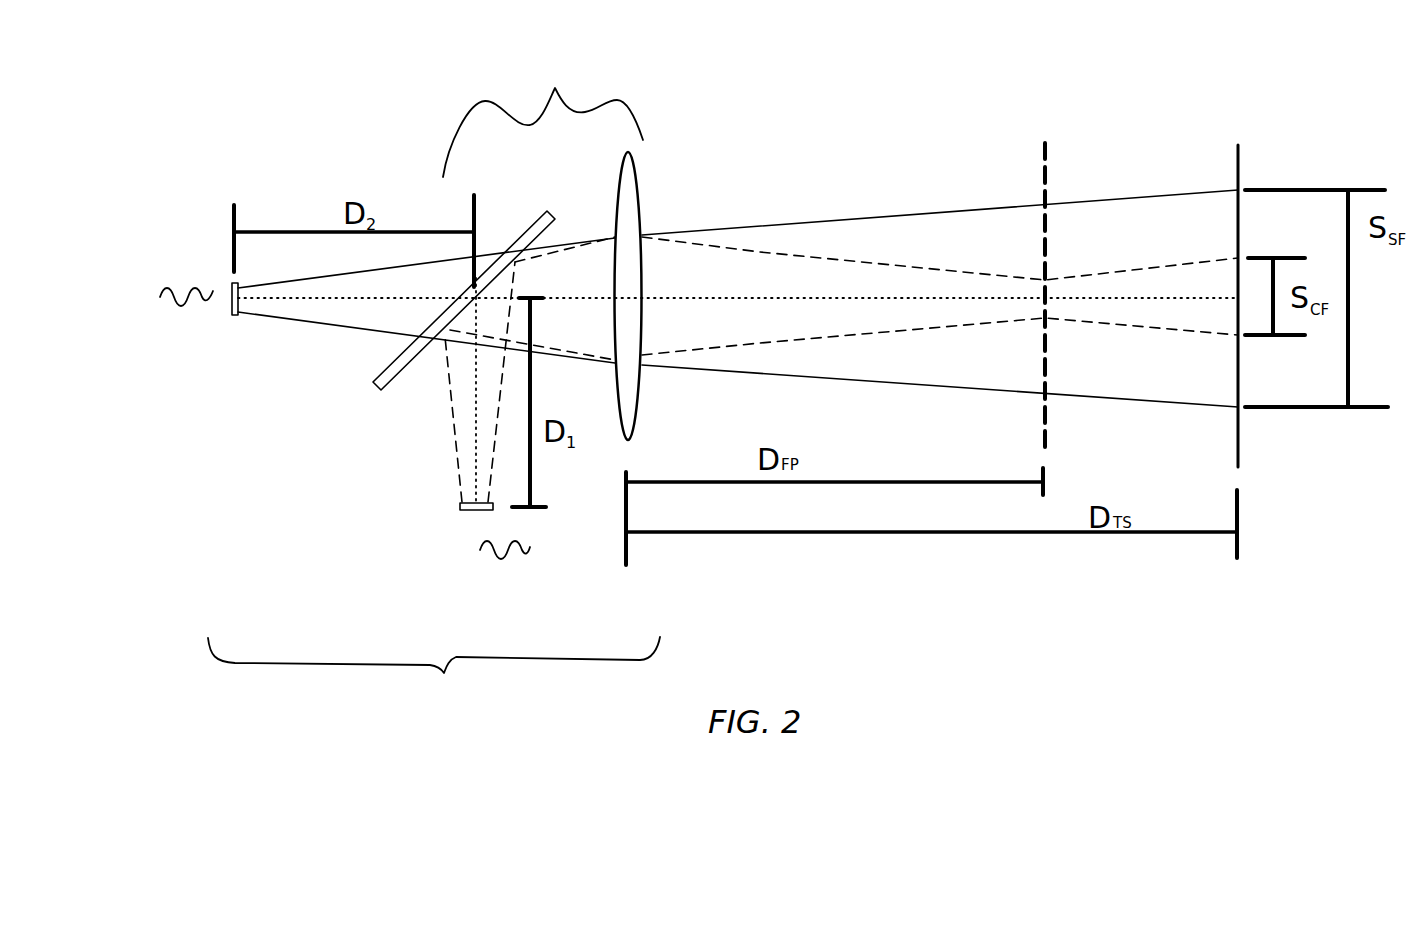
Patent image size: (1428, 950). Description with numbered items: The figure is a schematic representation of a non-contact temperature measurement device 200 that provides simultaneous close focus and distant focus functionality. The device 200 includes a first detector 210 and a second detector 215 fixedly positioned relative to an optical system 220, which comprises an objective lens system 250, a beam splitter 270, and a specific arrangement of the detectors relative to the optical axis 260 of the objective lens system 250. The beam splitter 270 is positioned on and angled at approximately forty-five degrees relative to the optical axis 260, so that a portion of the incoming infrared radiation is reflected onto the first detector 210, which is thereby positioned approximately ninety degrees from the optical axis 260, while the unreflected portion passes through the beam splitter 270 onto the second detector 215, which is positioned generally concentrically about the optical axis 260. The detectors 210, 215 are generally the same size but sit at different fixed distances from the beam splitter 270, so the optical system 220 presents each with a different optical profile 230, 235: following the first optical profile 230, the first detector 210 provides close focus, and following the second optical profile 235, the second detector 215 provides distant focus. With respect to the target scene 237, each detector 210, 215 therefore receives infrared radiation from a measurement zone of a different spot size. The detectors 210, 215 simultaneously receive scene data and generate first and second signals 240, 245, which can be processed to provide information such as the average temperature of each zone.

The temperature measurement device 200 is at (434, 673).
The first detector 210 is at (462, 512).
The second detector 215 is at (236, 316).
The optical system 220 is at (543, 120).
The first optical profile 230 is at (783, 253).
The second optical profile 235 is at (905, 215).
The target scene 237 is at (1240, 165).
The first signal 240 is at (177, 281).
The second signal 245 is at (528, 543).
The objective lens system 250 is at (637, 160).
The optical axis 260 is at (1145, 297).
The beam splitter 270 is at (378, 390).